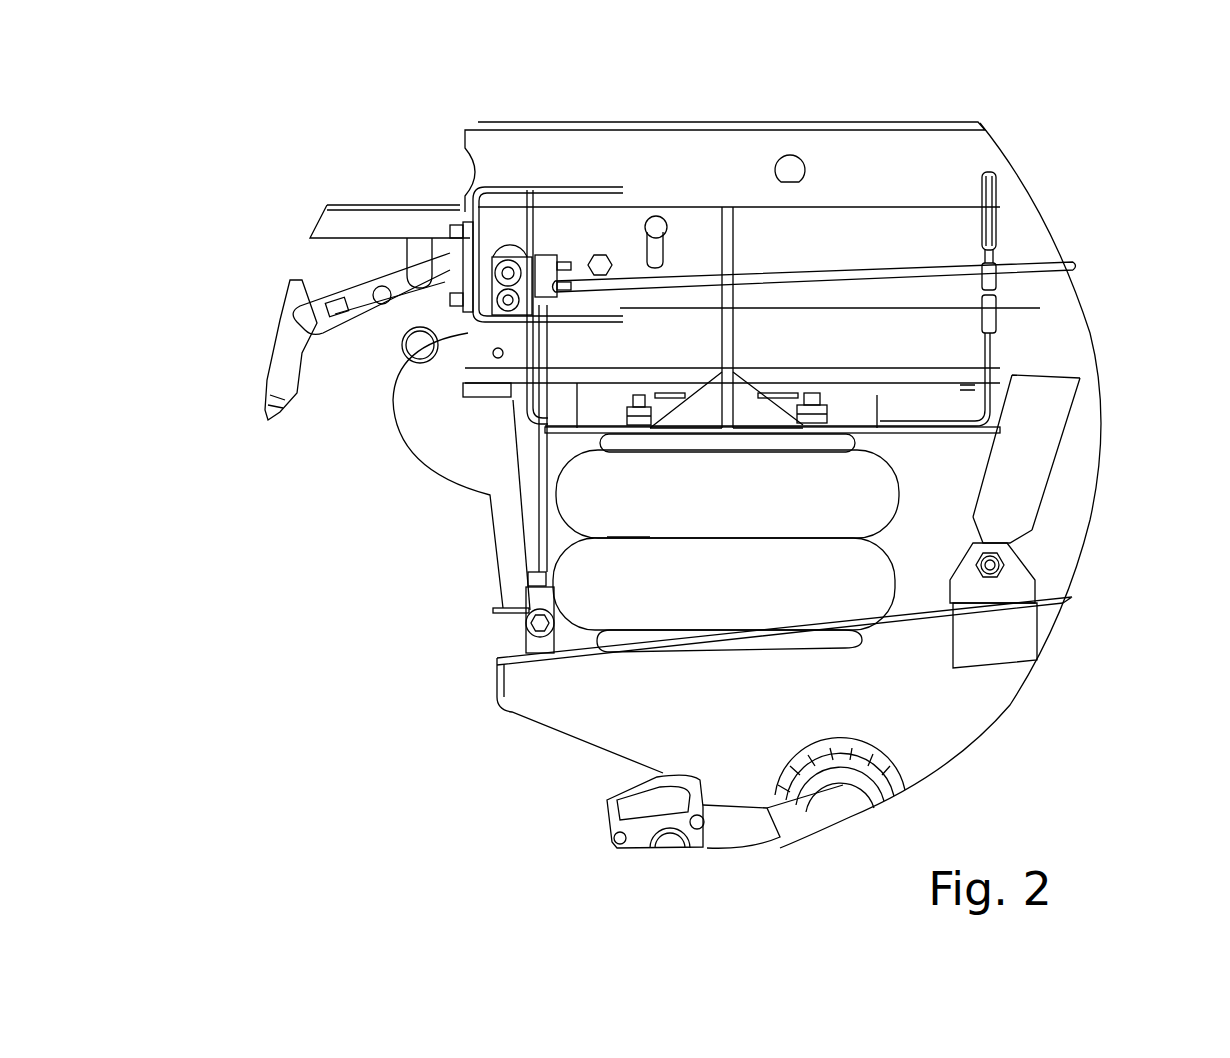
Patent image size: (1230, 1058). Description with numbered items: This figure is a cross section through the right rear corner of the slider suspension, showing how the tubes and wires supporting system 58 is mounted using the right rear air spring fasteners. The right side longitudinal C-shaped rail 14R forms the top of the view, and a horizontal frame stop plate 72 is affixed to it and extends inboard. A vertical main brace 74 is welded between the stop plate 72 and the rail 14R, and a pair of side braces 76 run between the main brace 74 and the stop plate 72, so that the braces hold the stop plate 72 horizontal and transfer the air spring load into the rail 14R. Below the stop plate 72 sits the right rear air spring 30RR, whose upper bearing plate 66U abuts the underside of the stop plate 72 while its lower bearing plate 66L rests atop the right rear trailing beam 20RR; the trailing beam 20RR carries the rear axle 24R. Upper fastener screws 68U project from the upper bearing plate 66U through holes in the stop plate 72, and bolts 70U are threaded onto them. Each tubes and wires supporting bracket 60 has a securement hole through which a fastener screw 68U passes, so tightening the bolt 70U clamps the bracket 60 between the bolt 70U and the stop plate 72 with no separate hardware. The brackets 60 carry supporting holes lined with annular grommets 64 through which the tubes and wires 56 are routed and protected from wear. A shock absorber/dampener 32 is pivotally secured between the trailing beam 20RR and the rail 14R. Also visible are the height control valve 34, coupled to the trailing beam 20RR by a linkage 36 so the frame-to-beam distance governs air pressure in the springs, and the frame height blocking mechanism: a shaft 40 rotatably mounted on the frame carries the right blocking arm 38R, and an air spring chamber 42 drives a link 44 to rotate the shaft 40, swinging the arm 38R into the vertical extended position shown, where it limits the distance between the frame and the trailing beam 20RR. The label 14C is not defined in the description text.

The right side longitudinal C-shaped rail 14R is at (885, 170).
The cross bracket 14C is at (477, 205).
The main brace 74 is at (726, 240).
The upper fastener screws 68U is at (635, 398).
The upper bolts 70U is at (630, 416).
The side braces 76 is at (695, 400).
The tubes and wires 56 is at (1027, 270).
The tubes and wires supporting system 58 is at (1016, 165).
The grommets 64 is at (993, 268).
The tubes and wires supporting bracket 60 is at (993, 358).
The height control valve 34 is at (508, 303).
The link 44 is at (360, 300).
The air spring chamber 42 is at (290, 333).
The shaft 40 is at (410, 357).
The right blocking arm 38R is at (470, 452).
The linkage 36 is at (540, 464).
The frame stop plate 72 is at (860, 430).
The shock absorber/dampener 32 is at (1062, 323).
The upper bearing plate 66U is at (820, 446).
The lower bearing plate 66L is at (830, 615).
The right rear trailing beam 20RR is at (578, 695).
The right rear air spring 30RR is at (655, 585).
The rear axle 24R is at (875, 780).